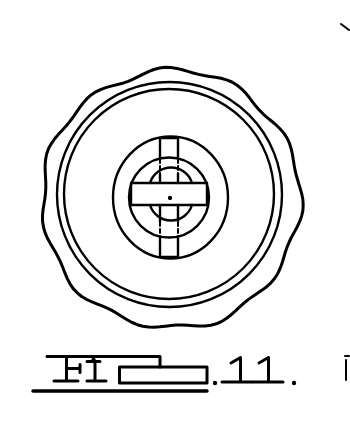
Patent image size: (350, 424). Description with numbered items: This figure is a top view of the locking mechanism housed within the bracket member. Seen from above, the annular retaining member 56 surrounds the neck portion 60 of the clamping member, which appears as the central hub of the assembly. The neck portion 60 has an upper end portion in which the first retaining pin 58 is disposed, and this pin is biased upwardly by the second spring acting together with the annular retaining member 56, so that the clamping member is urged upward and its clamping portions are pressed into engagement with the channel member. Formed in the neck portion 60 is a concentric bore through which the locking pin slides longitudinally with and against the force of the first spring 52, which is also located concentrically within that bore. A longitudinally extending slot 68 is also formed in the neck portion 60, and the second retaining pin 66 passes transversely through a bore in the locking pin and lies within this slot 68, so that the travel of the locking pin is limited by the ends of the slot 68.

The first spring 52 is at (155, 71).
The annular retaining member 56 is at (100, 143).
The first retaining pin 58 is at (172, 193).
The neck portion 60 is at (144, 167).
The second retaining pin 66 is at (204, 198).
The longitudinally extending slot 68 is at (135, 195).